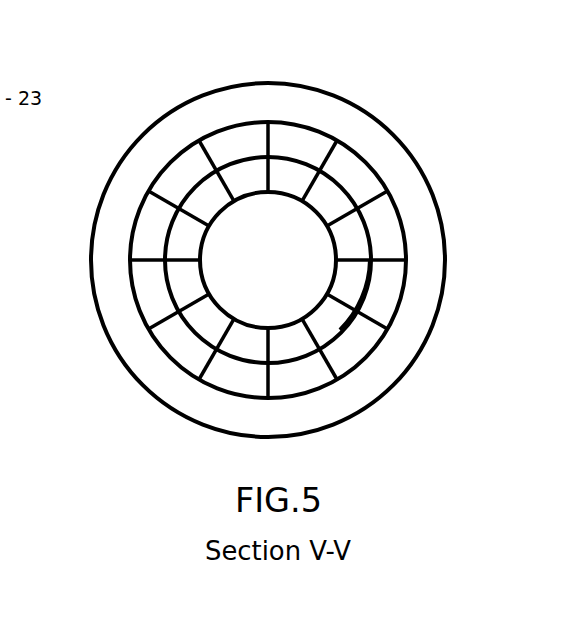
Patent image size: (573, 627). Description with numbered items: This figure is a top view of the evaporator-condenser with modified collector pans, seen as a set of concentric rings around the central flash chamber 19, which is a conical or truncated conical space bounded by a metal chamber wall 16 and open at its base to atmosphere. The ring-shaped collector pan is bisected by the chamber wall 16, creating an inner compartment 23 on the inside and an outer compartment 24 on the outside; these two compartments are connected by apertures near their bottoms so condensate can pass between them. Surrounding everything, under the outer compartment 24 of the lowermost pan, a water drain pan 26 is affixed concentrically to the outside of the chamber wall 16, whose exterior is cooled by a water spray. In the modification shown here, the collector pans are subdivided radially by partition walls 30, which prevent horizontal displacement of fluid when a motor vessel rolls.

The chamber wall 16 is at (365, 356).
The flash chamber 19 is at (258, 237).
The inner compartment 23 is at (188, 285).
The outer compartment 24 is at (182, 348).
The water drain pan 26 is at (366, 108).
The partition walls 30 is at (388, 262).